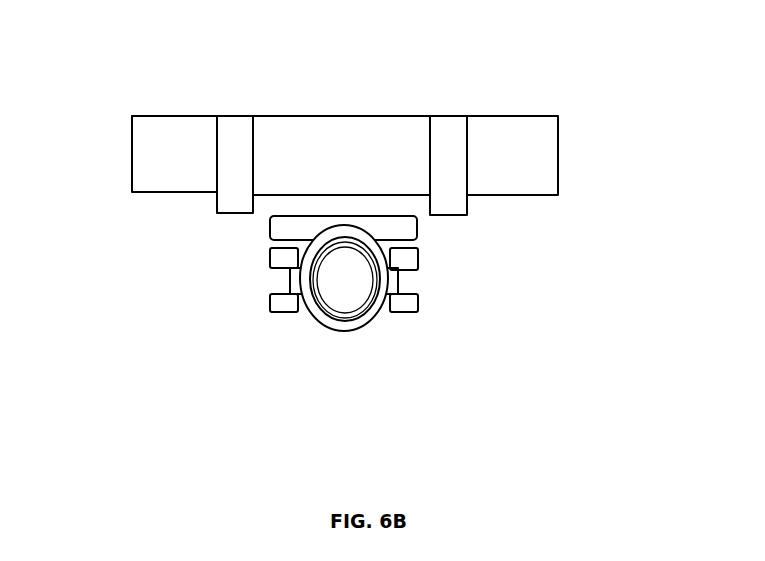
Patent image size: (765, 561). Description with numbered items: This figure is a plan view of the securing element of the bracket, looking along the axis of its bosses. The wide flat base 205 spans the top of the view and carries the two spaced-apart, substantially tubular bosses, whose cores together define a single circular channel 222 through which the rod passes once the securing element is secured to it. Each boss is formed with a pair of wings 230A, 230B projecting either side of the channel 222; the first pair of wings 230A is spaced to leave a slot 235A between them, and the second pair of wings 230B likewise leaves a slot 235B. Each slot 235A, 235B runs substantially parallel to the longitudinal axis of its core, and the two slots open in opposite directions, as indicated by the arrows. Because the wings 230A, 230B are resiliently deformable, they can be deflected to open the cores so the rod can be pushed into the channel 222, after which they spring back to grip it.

The base 205 is at (268, 117).
The channel 222 is at (338, 282).
The pair of wings 230A is at (270, 256).
The pair of wings 230B is at (418, 260).
The slot 235A is at (271, 277).
The slot 235B is at (418, 279).